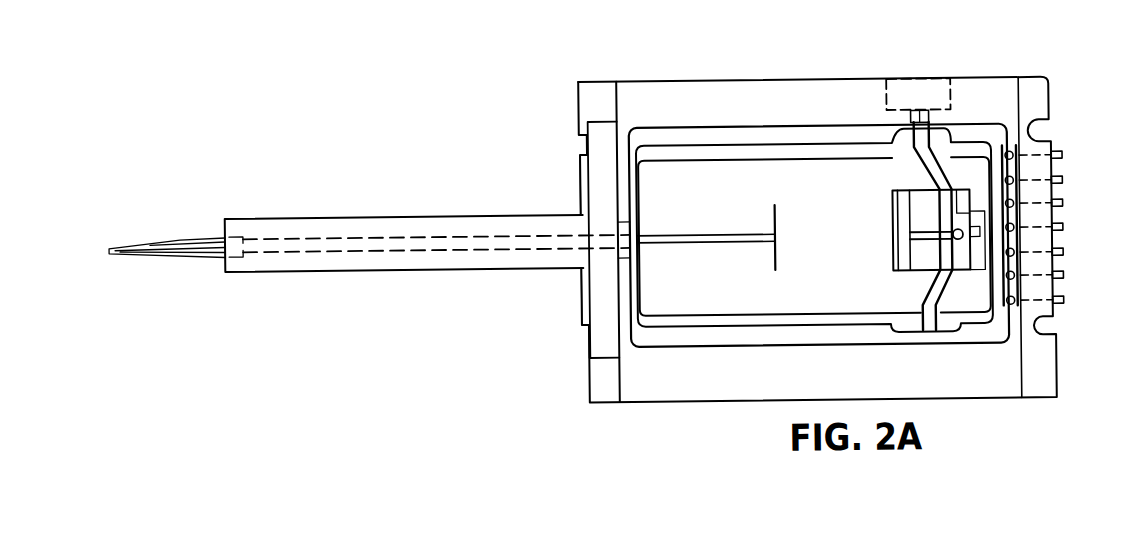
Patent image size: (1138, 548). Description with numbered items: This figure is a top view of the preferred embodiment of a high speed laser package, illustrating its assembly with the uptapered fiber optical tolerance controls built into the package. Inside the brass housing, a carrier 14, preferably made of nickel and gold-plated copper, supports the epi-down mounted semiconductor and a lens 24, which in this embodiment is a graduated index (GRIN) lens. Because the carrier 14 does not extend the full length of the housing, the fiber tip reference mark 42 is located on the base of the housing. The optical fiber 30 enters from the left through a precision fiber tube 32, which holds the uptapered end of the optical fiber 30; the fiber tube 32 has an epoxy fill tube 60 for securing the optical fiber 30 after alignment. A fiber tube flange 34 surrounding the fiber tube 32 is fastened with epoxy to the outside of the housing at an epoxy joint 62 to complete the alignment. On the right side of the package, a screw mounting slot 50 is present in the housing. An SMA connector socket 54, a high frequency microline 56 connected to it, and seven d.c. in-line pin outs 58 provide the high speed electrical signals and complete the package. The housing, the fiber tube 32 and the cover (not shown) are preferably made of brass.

The carrier 14 is at (893, 218).
The lens 24 is at (895, 266).
The optical fiber 30 is at (730, 231).
The precision fiber tube 32 is at (523, 212).
The fiber tube flange 34 is at (590, 330).
The fiber tip reference mark 42 is at (772, 253).
The screw mounting slot 50 is at (1036, 146).
The SMA connector socket 54 is at (930, 82).
The high frequency microline 56 is at (900, 143).
The d.c. in-line pin outs 58 is at (1060, 213).
The epoxy fill tube 60 is at (433, 243).
The epoxy joint 62 is at (610, 338).